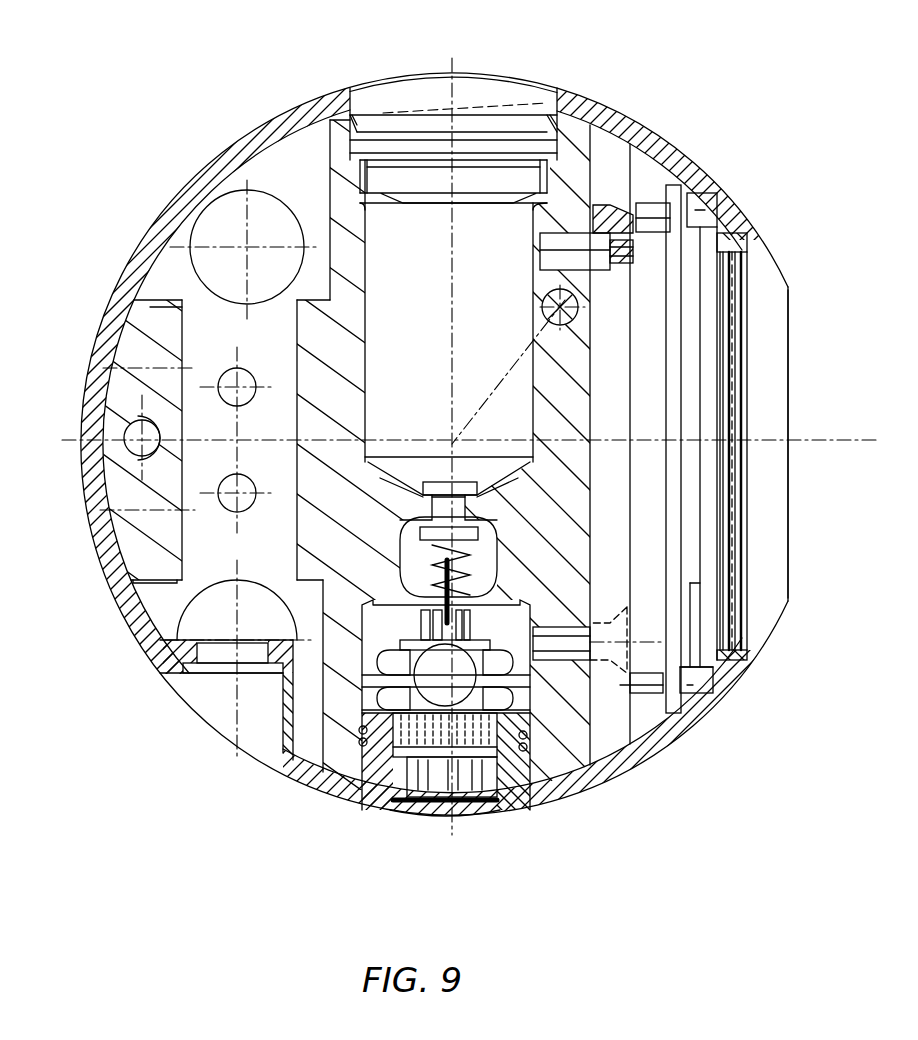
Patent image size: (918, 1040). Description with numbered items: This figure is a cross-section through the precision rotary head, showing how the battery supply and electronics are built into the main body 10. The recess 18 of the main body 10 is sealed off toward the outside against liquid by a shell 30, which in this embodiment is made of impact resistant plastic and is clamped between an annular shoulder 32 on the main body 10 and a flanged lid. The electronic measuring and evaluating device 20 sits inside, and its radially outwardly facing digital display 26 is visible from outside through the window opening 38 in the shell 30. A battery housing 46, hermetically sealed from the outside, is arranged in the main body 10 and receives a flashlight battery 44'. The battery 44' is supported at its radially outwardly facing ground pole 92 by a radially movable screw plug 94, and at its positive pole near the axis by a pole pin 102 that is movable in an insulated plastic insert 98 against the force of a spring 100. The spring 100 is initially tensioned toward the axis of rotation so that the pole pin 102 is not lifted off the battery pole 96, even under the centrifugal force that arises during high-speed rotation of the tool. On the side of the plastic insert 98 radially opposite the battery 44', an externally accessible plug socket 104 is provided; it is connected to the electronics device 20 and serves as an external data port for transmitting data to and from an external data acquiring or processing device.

The main body 10 is at (313, 97).
The shell 30 is at (257, 137).
The annular shoulder 32 is at (767, 567).
The screw plug 94 is at (403, 167).
The ground pole 92 is at (467, 187).
The flashlight battery 44' is at (570, 149).
The recess 18 is at (653, 277).
The window opening 38 is at (743, 367).
The digital display 26 is at (700, 404).
The electronic measuring and evaluating device 20 is at (672, 637).
The battery housing 46 is at (368, 272).
The plastic insert 98 is at (372, 545).
The battery pole 96 is at (323, 767).
The spring 100 is at (393, 607).
The pole pin 102 is at (483, 513).
The plug socket 104 is at (463, 812).